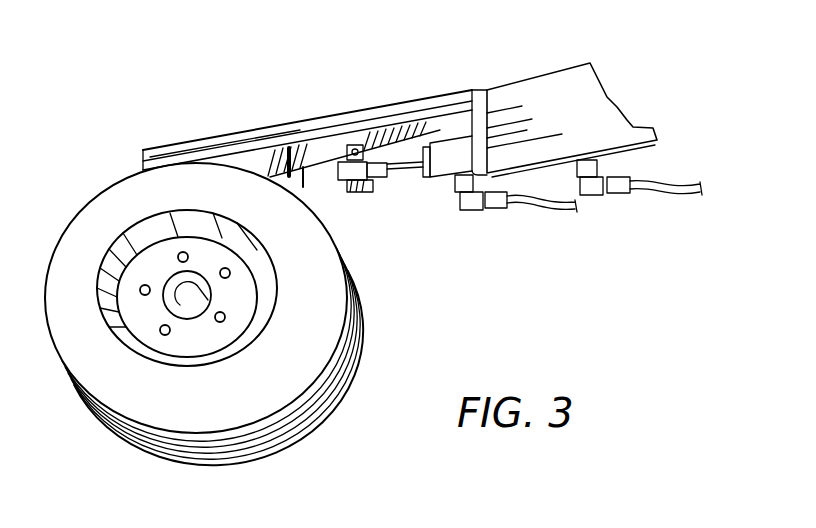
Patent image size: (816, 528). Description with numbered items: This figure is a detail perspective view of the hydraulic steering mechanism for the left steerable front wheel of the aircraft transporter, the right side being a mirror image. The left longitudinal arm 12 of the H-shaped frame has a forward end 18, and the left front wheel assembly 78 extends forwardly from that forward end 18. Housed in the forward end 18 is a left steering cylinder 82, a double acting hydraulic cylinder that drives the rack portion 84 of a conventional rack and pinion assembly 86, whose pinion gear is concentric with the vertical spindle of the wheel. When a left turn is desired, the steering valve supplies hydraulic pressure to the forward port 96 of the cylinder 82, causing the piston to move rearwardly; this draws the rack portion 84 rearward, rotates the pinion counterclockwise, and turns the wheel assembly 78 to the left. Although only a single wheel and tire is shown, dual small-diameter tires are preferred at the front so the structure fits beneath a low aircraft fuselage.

The left longitudinal arm 12 is at (615, 98).
The forward end 18 is at (471, 90).
The left front wheel assembly 78 is at (473, 303).
The left steering cylinder 82 is at (431, 178).
The rack portion 84 is at (323, 150).
The rack and pinion assembly 86 is at (250, 162).
The forward port 96 is at (465, 170).